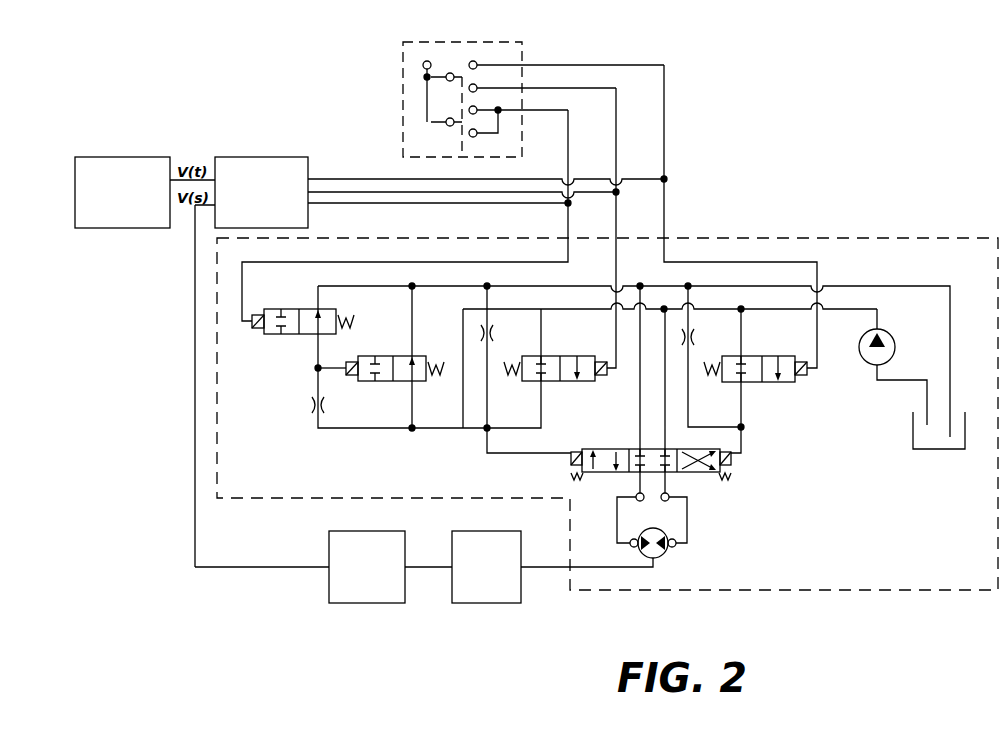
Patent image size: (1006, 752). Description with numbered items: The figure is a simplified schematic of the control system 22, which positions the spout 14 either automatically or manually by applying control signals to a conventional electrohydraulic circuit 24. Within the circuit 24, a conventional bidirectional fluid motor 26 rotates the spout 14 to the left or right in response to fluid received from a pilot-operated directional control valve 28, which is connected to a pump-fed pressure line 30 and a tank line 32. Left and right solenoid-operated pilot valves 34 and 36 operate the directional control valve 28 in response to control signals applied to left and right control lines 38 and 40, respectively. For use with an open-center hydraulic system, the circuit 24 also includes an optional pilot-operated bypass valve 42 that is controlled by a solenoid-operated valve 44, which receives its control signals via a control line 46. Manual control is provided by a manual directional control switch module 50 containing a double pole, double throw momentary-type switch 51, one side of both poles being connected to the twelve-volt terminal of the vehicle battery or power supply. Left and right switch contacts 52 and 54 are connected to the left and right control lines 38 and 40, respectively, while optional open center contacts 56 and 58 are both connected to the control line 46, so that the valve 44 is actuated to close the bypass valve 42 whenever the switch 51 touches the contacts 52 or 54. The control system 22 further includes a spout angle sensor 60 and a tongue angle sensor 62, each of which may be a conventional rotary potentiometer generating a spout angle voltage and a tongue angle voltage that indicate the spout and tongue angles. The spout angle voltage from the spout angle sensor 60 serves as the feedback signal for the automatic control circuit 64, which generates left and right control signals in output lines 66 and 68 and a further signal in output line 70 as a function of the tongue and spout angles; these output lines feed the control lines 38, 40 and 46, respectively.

The spout 14 is at (512, 531).
The control system 22 is at (232, 62).
The electrohydraulic circuit 24 is at (217, 317).
The bidirectional fluid motor 26 is at (665, 552).
The pilot-operated directional control valve 28 is at (612, 449).
The pump-fed pressure line 30 is at (848, 309).
The tank line 32 is at (900, 286).
The left solenoid-operated pilot valve 34 is at (570, 356).
The right solenoid-operated pilot valve 36 is at (765, 356).
The left control line 38 is at (618, 229).
The right control line 40 is at (666, 222).
The pilot-operated bypass valve 42 is at (368, 356).
The solenoid-operated valve 44 is at (310, 308).
The control line 46 is at (570, 220).
The manual directional control switch module 50 is at (403, 112).
The double pole, double throw momentary-type switch 51 is at (468, 46).
The left switch contact 52 is at (476, 91).
The right switch contact 54 is at (476, 58).
The open center contact 56 is at (476, 113).
The open center contact 58 is at (475, 136).
The spout angle sensor 60 is at (395, 531).
The tongue angle sensor 62 is at (95, 157).
The automatic control circuit 64 is at (293, 157).
The output line 66 is at (372, 192).
The output line 68 is at (330, 179).
The output line 70 is at (330, 203).